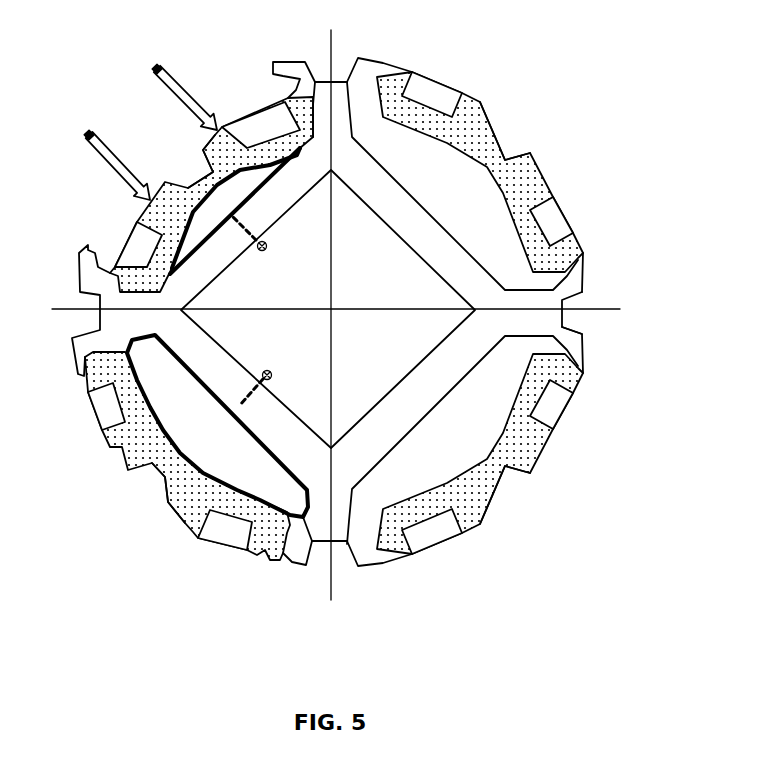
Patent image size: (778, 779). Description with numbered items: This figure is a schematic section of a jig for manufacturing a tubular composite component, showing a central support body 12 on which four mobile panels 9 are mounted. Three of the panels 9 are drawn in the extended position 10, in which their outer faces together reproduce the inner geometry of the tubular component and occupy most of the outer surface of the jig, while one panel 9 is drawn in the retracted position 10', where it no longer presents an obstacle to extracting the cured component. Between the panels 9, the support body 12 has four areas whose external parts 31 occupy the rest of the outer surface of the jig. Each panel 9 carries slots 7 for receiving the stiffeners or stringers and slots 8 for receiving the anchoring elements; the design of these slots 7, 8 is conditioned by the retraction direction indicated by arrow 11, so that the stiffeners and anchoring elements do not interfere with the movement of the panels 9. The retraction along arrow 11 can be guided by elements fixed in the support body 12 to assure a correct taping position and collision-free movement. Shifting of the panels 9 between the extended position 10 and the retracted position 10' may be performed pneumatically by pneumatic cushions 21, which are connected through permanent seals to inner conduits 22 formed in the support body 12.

The slots 7 is at (503, 131).
The slots 8 is at (256, 108).
The mobile panels 9 is at (537, 166).
The extended position 10 is at (386, 58).
The retracted position 10' is at (310, 63).
The arrow 11 is at (151, 88).
The support body 12 is at (400, 238).
The pneumatic cushions 21 is at (250, 194).
The inner conduits 22 is at (261, 357).
The external parts 31 is at (594, 281).